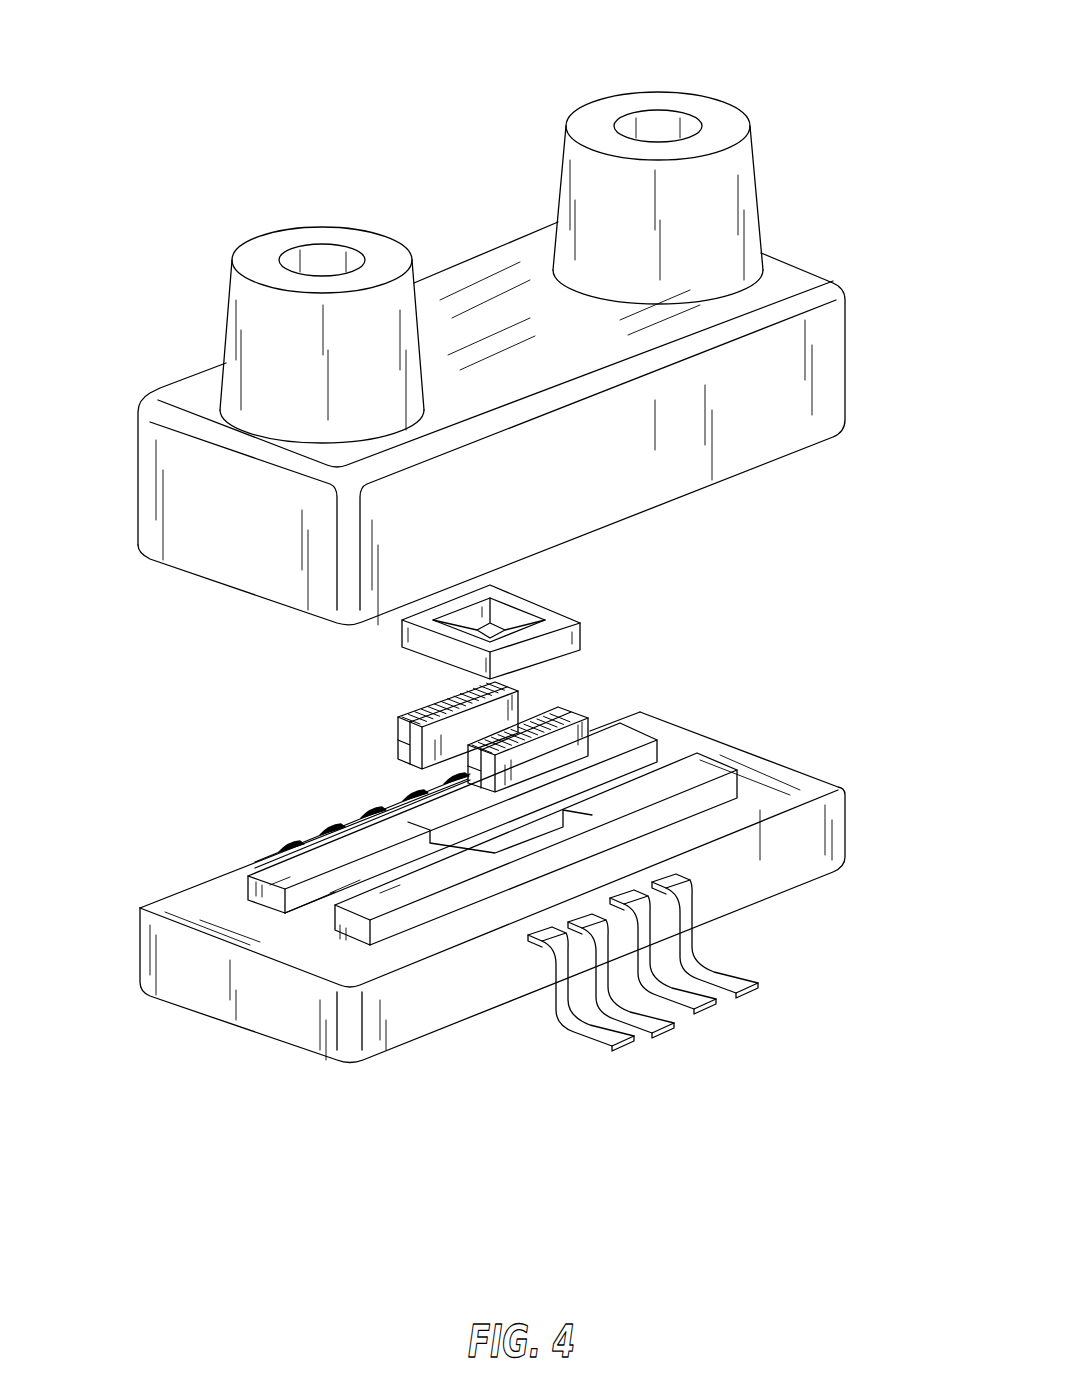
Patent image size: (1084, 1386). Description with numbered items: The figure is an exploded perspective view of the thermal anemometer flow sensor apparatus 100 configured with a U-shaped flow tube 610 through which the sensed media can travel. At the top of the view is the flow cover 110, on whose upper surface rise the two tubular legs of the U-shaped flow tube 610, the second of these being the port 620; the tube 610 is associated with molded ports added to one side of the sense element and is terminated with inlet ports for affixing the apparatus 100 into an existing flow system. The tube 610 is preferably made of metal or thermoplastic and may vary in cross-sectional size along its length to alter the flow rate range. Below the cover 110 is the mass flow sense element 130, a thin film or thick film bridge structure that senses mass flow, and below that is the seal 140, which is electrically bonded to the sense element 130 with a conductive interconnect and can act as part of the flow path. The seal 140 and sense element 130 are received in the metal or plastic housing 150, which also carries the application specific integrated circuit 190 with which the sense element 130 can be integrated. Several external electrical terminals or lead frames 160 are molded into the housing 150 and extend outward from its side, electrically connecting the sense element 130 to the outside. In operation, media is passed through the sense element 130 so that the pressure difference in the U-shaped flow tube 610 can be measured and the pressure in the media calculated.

The thermal anemometer flow sensor apparatus 100 is at (183, 55).
The flow cover 110 is at (825, 370).
The mass flow sense element 130 is at (560, 617).
The seal 140 is at (413, 745).
The housing 150 is at (825, 843).
The lead frames 160 is at (735, 978).
The application specific integrated circuit 190 is at (197, 893).
The U-shaped flow tube 610 is at (732, 122).
The cylindrical post 620 is at (315, 258).